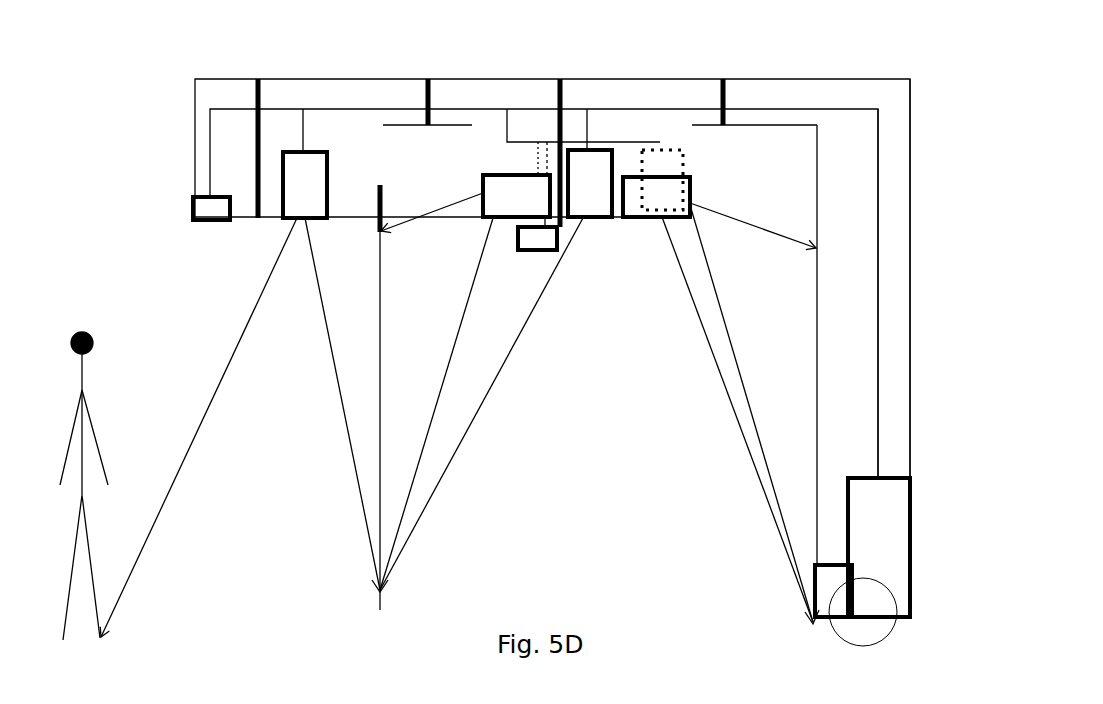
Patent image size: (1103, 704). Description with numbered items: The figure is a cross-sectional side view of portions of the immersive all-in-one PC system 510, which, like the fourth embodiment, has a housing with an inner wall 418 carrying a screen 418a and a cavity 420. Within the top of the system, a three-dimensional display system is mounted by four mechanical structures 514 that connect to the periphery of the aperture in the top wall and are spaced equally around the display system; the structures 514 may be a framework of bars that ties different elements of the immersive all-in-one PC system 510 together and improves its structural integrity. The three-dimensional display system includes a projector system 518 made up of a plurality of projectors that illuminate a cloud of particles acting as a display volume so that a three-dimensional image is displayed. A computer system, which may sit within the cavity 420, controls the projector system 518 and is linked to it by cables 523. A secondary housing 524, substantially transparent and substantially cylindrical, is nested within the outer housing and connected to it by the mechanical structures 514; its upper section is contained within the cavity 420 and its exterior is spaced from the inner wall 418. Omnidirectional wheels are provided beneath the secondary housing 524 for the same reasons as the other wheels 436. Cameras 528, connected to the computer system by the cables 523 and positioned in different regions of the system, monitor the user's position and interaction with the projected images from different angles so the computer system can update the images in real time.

The immersive all-in-one PC system 510 is at (143, 78).
The mechanical structures 514 is at (376, 192).
The projector system 518 is at (297, 208).
The cables 523 is at (675, 110).
The secondary housing 524 is at (384, 393).
The cameras 528 is at (211, 207).
The screen 418a is at (816, 180).
The inner wall 418 is at (855, 145).
The cavity 420 is at (891, 125).
The wheels 436 is at (847, 633).